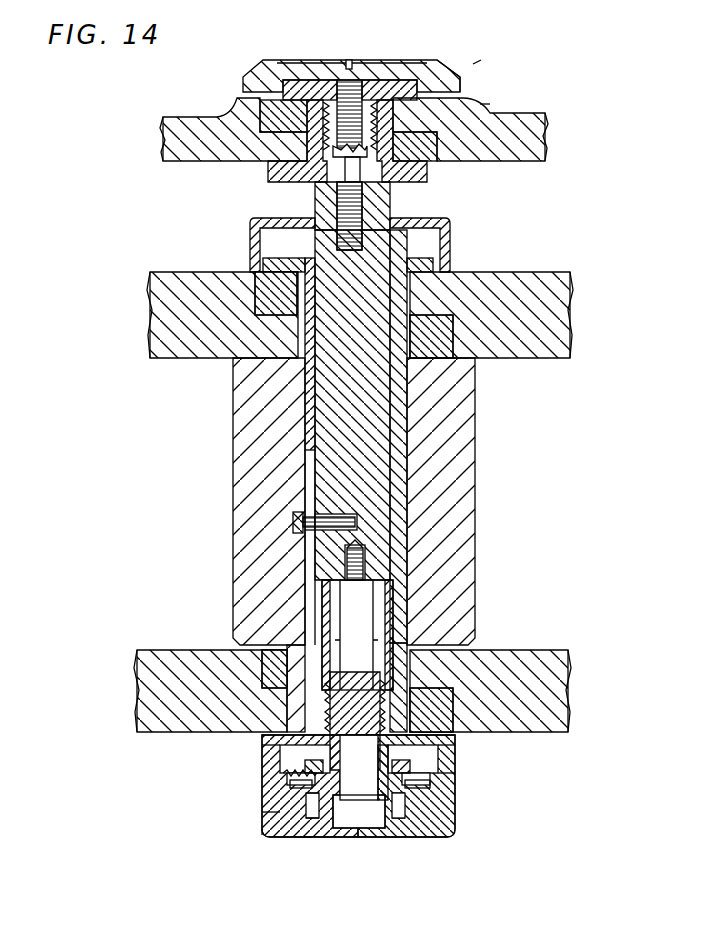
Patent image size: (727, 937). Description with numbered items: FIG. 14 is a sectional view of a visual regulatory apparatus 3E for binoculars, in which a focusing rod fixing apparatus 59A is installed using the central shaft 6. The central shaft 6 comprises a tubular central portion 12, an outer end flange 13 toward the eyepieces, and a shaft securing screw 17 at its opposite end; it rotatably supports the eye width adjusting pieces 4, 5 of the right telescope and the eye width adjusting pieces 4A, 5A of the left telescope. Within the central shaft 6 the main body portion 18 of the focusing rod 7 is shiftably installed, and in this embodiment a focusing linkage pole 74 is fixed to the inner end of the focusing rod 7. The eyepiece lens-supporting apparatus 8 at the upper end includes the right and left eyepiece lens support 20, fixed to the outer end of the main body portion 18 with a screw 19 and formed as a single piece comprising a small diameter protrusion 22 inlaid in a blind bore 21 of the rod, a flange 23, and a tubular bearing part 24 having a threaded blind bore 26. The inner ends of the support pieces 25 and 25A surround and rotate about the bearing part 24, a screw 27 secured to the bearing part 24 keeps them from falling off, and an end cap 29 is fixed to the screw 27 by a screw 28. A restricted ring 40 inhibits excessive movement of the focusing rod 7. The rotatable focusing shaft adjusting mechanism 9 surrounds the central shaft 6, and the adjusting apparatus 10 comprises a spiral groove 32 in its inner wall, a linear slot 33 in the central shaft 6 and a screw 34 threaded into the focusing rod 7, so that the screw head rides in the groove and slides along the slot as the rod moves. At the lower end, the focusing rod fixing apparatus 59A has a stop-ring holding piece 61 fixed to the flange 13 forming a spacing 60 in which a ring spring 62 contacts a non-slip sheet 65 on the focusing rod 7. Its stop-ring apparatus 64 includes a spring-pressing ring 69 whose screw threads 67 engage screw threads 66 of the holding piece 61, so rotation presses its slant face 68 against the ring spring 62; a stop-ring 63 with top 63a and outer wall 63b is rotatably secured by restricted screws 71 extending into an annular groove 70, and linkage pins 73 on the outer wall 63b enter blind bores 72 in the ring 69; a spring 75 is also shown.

The visual regulatory apparatus 3E is at (478, 62).
The eyepiece lens-supporting apparatus 8 is at (484, 103).
The end cap 29 is at (265, 74).
The screw 27 is at (289, 80).
The screw 28 is at (334, 60).
The threaded blind bore 26 is at (364, 105).
The tubular bearing part 24 is at (397, 82).
The screw 19 is at (437, 63).
The support piece 25 is at (180, 136).
The support piece 25A is at (548, 142).
The right and left eyepiece lens support 20 is at (276, 173).
The flange 23 is at (432, 172).
The small diameter protrusion 22 is at (313, 200).
The blind bore 21 is at (380, 202).
The restricted ring 40 is at (452, 233).
The outer end flange 13 is at (432, 263).
The eye width adjusting piece 4 is at (192, 318).
The eye width adjusting piece 4A is at (540, 316).
The main body portion 18 is at (322, 402).
The focusing rod 7 is at (372, 432).
The spiral groove 32 is at (295, 516).
The central shaft 6 is at (412, 476).
The adjusting apparatus 10 is at (284, 522).
The focusing shaft adjusting mechanism 9 is at (453, 512).
The screw 34 is at (315, 528).
The linear slot 33 is at (312, 566).
The tubular central portion 12 is at (402, 592).
The focusing linkage pole 74 is at (370, 634).
The non-slip sheet 65 is at (305, 714).
The eye width adjusting piece 5 is at (160, 688).
The eye width adjusting piece 5A is at (553, 690).
The stop-ring 63 is at (445, 836).
The housing top 63a is at (270, 745).
The outer wall 63b is at (306, 840).
The spring 75 is at (272, 772).
The restricted screw 71 is at (292, 780).
The screw threads 67 is at (298, 790).
The stop-ring apparatus 64 is at (262, 814).
The focusing rod fixing apparatus 59A is at (256, 834).
The screw threads 66 is at (285, 810).
The blind bore 72 is at (303, 826).
The linkage pins 73 is at (320, 820).
The slant face 68 is at (356, 814).
The spring-pressing ring 69 is at (386, 820).
The ring spring 62 is at (404, 796).
The stop-ring holding piece 61 is at (410, 768).
The annular groove 70 is at (456, 776).
The spacing 60 is at (448, 756).
The shaft securing screw 17 is at (390, 750).